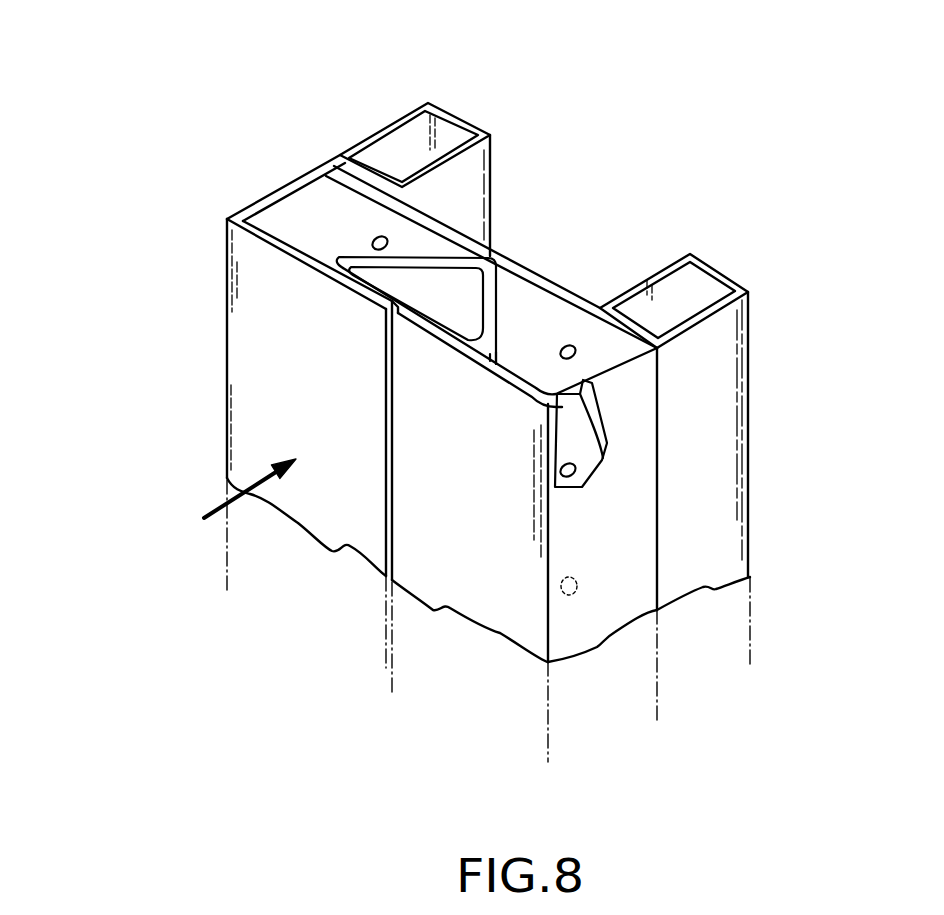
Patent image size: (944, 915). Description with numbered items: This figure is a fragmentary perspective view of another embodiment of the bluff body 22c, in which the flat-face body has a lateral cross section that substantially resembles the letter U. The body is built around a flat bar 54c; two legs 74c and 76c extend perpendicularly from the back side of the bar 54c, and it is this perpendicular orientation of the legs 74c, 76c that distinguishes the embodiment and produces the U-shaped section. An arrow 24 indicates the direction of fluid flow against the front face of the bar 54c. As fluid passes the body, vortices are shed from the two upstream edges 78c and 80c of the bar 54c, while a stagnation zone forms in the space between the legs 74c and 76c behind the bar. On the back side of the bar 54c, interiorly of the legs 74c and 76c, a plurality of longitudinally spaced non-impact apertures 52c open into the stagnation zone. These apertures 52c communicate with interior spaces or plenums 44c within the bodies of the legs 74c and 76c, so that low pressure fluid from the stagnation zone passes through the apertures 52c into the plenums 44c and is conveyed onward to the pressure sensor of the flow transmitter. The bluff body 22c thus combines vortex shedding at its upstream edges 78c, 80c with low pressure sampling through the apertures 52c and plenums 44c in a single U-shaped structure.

The bluff body 22c is at (133, 100).
The direction of assembly 24 is at (211, 508).
The plenums 44c is at (363, 200).
The non-impact apertures 52c is at (372, 242).
The bar 54c is at (265, 163).
The leg 74c is at (377, 122).
The leg 76c is at (750, 297).
The upstream edge 78c is at (226, 302).
The upstream edge 80c is at (553, 643).